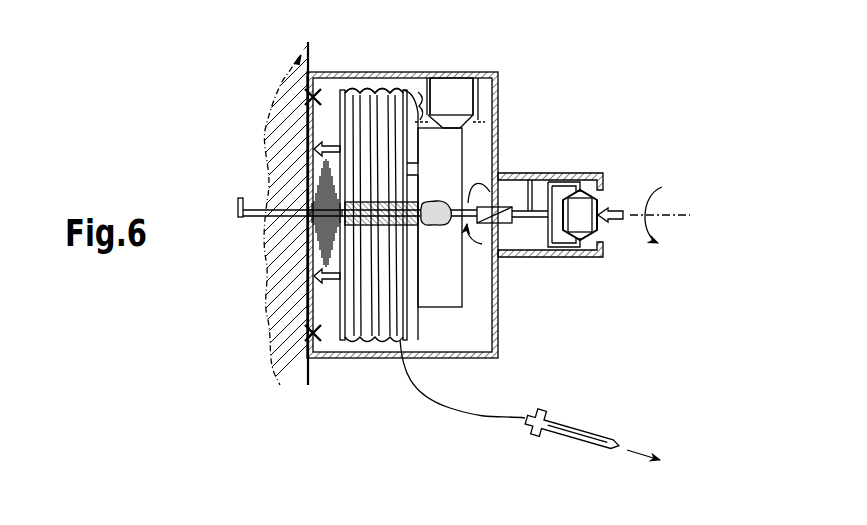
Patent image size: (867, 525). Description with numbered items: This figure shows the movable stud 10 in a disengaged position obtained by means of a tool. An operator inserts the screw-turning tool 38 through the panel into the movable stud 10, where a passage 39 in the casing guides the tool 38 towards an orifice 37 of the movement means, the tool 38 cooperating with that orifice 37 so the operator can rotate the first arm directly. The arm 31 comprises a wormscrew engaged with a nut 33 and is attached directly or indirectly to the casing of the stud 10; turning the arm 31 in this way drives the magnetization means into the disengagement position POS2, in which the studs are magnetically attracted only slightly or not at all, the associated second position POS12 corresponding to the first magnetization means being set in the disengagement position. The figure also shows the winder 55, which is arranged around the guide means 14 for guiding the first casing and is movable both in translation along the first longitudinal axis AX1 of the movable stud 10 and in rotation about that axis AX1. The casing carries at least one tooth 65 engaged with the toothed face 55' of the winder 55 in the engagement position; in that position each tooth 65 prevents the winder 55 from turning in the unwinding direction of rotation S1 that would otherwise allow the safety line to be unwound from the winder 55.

The movable stud 10 is at (283, 410).
The guide means 14 is at (308, 176).
The screw-turning tool 38 is at (250, 218).
The passage 39 is at (297, 223).
The winder 55 is at (500, 275).
The toothed face 55' is at (374, 60).
The tooth 65 is at (422, 100).
The second position POS12 is at (455, 90).
The arm 31 is at (530, 200).
The nut 33 is at (512, 222).
The orifice 37 is at (438, 228).
The first longitudinal axis AX1 is at (697, 197).
The unwinding direction of rotation S1 is at (671, 219).
The disengagement position POS2 is at (566, 272).